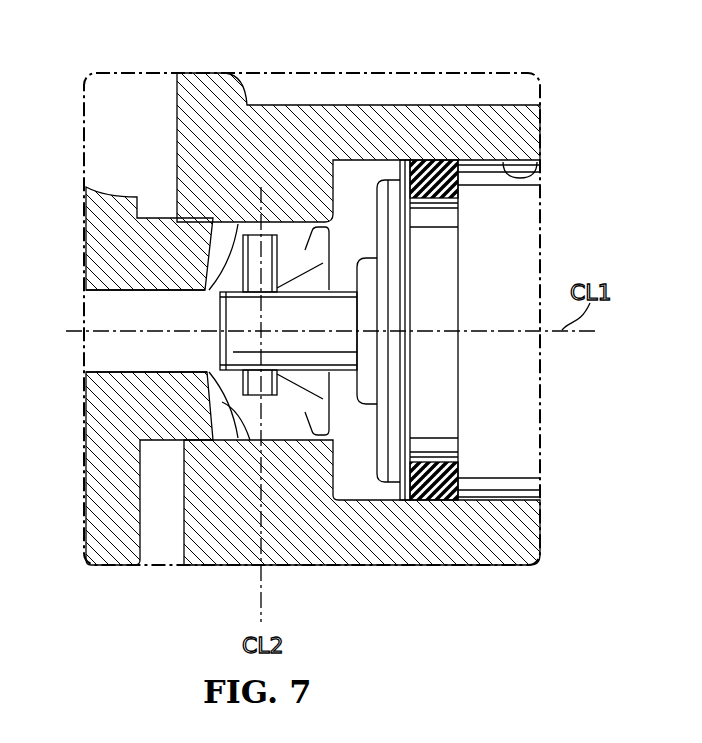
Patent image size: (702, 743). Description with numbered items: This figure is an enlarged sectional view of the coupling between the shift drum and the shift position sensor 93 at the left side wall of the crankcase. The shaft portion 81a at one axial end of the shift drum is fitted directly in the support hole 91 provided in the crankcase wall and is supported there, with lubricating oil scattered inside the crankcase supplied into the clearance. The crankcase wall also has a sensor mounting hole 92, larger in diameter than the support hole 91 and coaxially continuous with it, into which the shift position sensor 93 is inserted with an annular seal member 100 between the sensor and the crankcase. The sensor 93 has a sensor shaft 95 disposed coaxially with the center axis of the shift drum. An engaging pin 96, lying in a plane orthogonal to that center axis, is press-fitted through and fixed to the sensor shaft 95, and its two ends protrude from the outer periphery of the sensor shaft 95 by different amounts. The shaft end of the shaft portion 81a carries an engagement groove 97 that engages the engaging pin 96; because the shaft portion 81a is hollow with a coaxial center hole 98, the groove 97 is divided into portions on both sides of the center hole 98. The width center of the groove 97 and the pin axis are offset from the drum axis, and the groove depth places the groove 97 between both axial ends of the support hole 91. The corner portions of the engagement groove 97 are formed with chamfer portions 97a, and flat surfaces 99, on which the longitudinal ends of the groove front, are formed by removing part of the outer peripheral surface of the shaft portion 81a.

The shaft portion 81a is at (162, 222).
The flat surfaces 99 is at (227, 222).
The engaging pin 96 is at (266, 248).
The annular seal member 100 is at (440, 162).
The sensor mounting hole 92 is at (537, 172).
The chamfer portions 97a is at (320, 247).
The shift position sensor 93 is at (502, 272).
The support hole 91 is at (217, 290).
The sensor shaft 95 is at (237, 348).
The center hole 98 is at (103, 372).
The engagement groove 97 is at (246, 436).